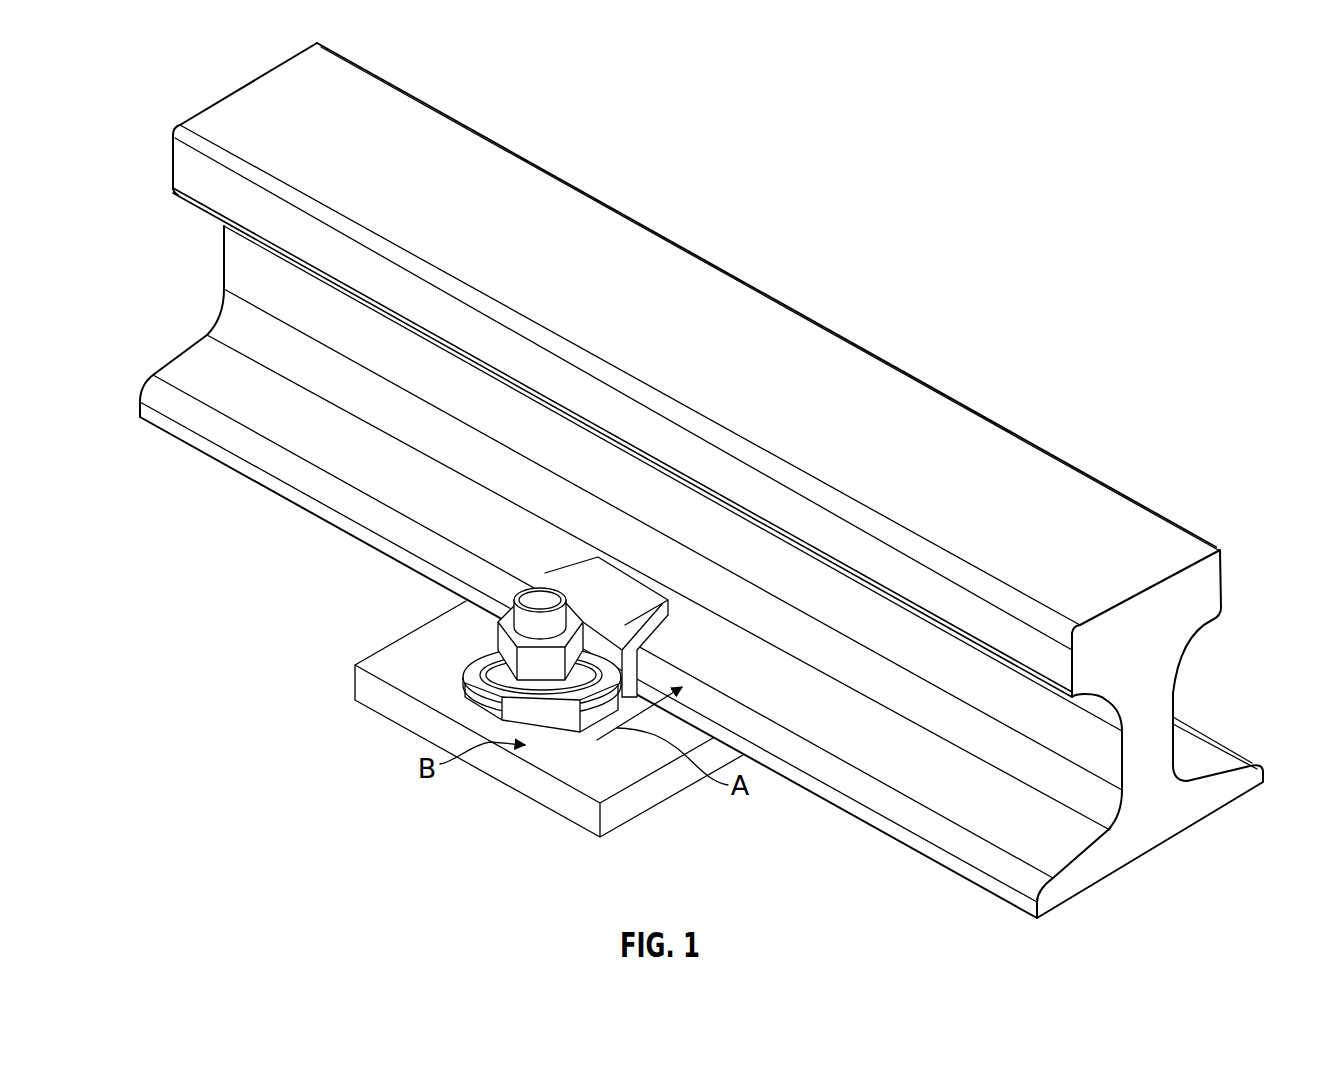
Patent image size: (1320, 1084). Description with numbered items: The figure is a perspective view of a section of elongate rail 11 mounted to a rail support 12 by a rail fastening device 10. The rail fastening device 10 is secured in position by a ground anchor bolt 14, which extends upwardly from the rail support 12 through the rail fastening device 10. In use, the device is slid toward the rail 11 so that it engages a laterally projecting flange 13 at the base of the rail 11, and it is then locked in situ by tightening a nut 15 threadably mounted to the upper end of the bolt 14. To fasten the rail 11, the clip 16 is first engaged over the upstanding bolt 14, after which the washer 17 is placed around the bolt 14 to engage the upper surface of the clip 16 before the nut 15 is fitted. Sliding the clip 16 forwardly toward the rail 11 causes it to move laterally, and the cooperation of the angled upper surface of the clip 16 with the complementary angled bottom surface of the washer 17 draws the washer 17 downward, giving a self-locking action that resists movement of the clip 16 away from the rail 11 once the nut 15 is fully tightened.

The rail fastening device 10 is at (527, 672).
The rail 11 is at (701, 480).
The rail support 12 is at (388, 702).
The laterally projecting flange 13 is at (953, 803).
The ground anchor bolt 14 is at (538, 597).
The nut 15 is at (506, 660).
The clip 16 is at (578, 577).
The washer 17 is at (545, 683).